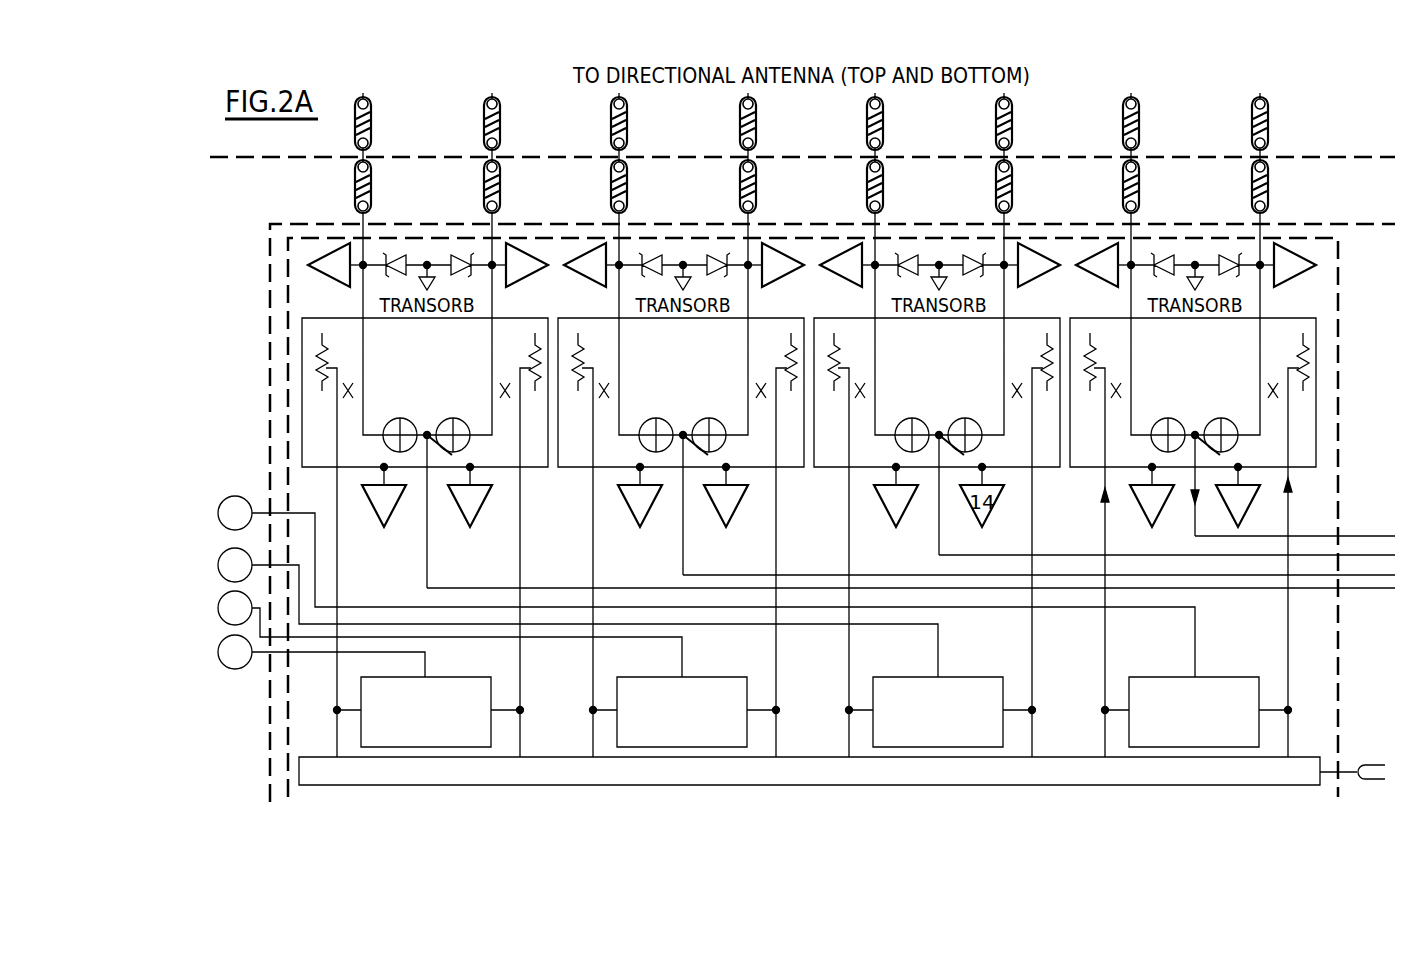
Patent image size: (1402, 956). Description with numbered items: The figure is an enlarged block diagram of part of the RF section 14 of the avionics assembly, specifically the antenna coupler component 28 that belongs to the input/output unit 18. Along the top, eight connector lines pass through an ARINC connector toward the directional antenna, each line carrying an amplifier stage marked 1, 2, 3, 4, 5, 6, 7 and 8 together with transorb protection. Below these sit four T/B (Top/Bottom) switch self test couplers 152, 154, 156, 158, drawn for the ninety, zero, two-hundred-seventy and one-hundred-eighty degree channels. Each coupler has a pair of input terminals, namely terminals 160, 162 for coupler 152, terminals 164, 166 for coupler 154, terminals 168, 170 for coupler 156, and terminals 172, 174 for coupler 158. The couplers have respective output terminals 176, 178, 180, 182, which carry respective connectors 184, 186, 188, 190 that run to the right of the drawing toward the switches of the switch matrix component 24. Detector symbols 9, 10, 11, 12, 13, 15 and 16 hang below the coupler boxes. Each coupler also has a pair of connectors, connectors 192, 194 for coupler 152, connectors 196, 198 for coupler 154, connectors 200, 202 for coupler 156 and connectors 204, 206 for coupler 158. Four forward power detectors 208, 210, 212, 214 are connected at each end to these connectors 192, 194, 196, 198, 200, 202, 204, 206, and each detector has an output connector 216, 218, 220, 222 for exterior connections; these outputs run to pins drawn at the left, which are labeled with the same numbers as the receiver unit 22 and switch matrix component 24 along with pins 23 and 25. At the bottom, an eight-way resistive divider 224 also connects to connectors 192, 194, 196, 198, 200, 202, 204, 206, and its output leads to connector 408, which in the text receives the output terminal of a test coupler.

The radio frequency section 14 is at (1299, 92).
The input/output unit 18 is at (1032, 226).
The antenna coupler component 28 is at (1338, 330).
The amplifier 1 is at (337, 265).
The amplifier 2 is at (519, 265).
The amplifier 3 is at (593, 265).
The amplifier 4 is at (775, 265).
The amplifier 5 is at (849, 265).
The amplifier 6 is at (1031, 265).
The amplifier 7 is at (1105, 265).
The amplifier 8 is at (1287, 265).
The detector amplifier 9 is at (384, 506).
The detector amplifier 10 is at (470, 506).
The detector amplifier 11 is at (640, 506).
The detector amplifier 12 is at (726, 506).
The detector amplifier 13 is at (896, 506).
The detector amplifier 15 is at (1152, 506).
The detector amplifier 16 is at (1238, 506).
The T/B switch self test coupler 152 is at (350, 318).
The T/B switch self test coupler 154 is at (677, 349).
The T/B switch self test coupler 156 is at (933, 349).
The T/B switch self test coupler 158 is at (1189, 349).
The input terminal 160 is at (338, 552).
The input terminal 162 is at (520, 540).
The input terminal 164 is at (575, 484).
The input terminal 166 is at (796, 484).
The input terminal 168 is at (825, 484).
The input terminal 170 is at (1059, 484).
The input terminal 172 is at (1085, 484).
The input terminal 174 is at (1306, 484).
The output terminal 176 is at (428, 522).
The output terminal 178 is at (700, 505).
The output terminal 180 is at (957, 495).
The output terminal 182 is at (1212, 486).
The connector 184 is at (427, 578).
The connector 186 is at (1003, 561).
The connector 188 is at (1132, 559).
The connector 190 is at (1262, 540).
The connector 192 is at (337, 670).
The connector 194 is at (520, 680).
The connector 196 is at (569, 678).
The connector 198 is at (803, 678).
The connector 200 is at (817, 678).
The connector 202 is at (1062, 678).
The connector 204 is at (1082, 678).
The connector 206 is at (1253, 678).
The forward power detector 208 is at (438, 677).
The forward power detector 210 is at (685, 695).
The forward power detector 212 is at (941, 696).
The forward power detector 214 is at (1197, 695).
The output connector 216 is at (420, 655).
The output connector 218 is at (682, 652).
The output connector 220 is at (938, 642).
The output connector 222 is at (1195, 645).
The eight-way resistive divider 224 is at (320, 785).
The connector 408 is at (1378, 764).
The receiver unit 22 is at (235, 608).
The connector pin 23 is at (235, 652).
The switch matrix component 24 is at (235, 513).
The connector pin 25 is at (235, 565).